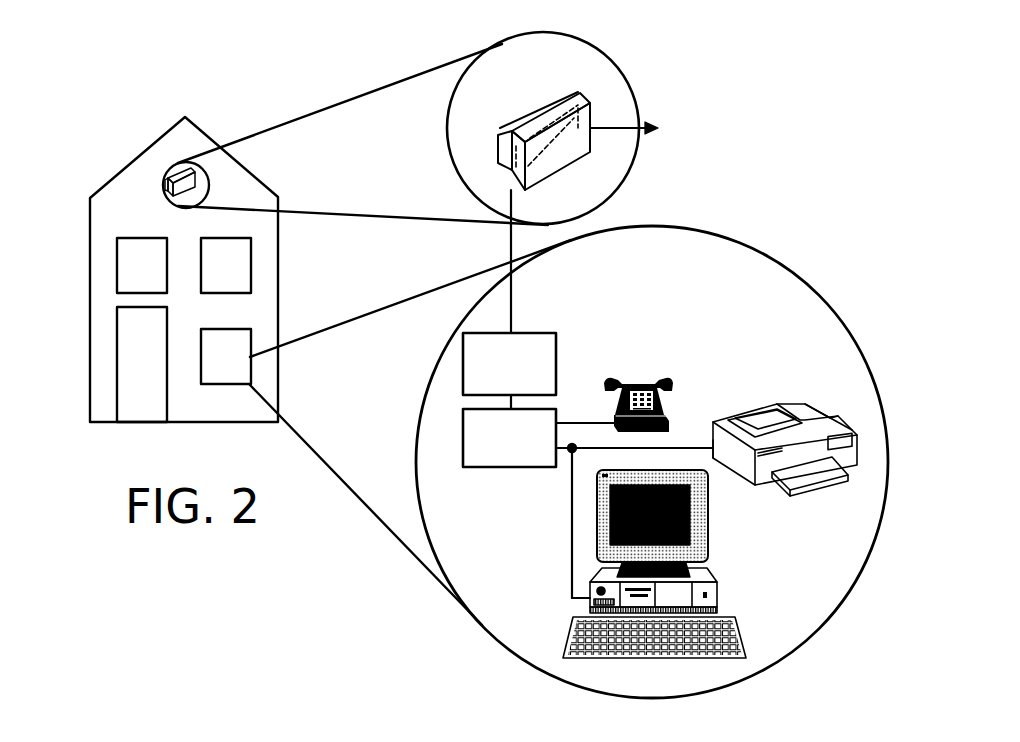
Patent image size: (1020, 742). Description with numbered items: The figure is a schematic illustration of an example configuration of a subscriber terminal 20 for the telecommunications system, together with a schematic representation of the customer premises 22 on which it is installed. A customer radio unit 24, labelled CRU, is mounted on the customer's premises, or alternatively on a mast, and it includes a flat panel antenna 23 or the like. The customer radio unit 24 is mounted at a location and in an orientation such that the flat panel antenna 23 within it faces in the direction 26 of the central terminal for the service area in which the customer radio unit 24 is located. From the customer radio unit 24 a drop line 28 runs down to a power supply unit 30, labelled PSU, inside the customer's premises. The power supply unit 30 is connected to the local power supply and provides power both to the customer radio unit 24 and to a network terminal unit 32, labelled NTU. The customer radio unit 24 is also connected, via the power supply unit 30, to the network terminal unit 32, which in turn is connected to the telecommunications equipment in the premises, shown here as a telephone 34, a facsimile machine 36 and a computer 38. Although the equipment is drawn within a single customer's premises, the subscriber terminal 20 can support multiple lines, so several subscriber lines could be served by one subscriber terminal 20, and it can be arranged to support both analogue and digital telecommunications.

The subscriber terminal 20 is at (680, 196).
The customer premises 22 is at (90, 218).
The flat panel antenna 23 is at (510, 172).
The customer radio unit 24 is at (578, 102).
The direction of the central terminal 26 is at (630, 127).
The drop line 28 is at (510, 247).
The power supply unit 30 is at (557, 347).
The network terminal unit 32 is at (507, 468).
The telephone 34 is at (654, 376).
The facsimile machine 36 is at (765, 497).
The computer 38 is at (718, 610).